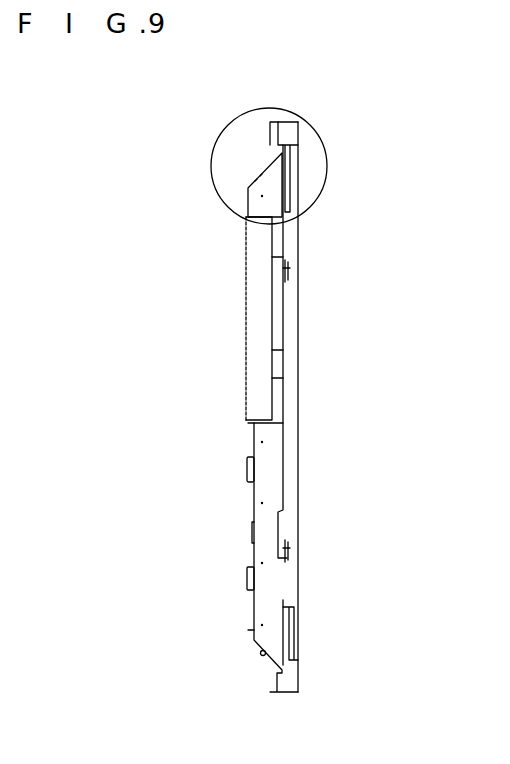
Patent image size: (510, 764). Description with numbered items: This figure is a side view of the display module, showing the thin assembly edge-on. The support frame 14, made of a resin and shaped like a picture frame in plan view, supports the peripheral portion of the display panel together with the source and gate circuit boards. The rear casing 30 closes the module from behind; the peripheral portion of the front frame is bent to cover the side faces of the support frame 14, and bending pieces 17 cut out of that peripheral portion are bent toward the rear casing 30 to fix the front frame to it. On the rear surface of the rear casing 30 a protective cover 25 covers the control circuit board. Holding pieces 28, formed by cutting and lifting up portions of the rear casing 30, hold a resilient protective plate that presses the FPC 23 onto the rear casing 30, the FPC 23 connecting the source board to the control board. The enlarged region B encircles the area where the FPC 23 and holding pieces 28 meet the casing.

The FPC 23 is at (278, 138).
The holding pieces 28 is at (257, 172).
The enlarged portion B is at (313, 128).
The protective cover 25 is at (246, 356).
The bending pieces 17 is at (287, 267).
The rear casing 30 is at (252, 503).
The support frame 14 is at (293, 637).